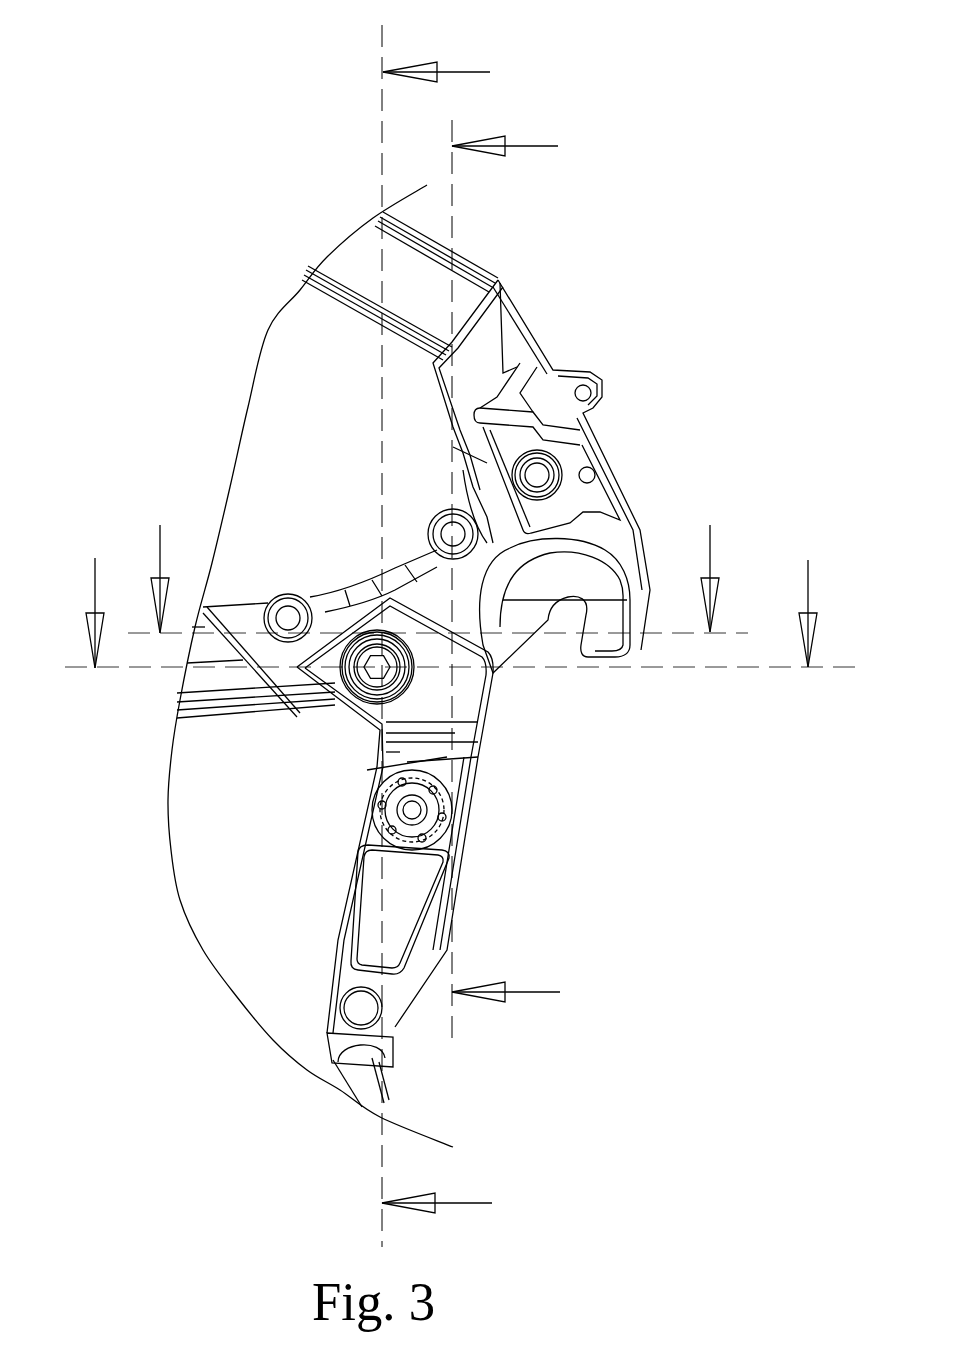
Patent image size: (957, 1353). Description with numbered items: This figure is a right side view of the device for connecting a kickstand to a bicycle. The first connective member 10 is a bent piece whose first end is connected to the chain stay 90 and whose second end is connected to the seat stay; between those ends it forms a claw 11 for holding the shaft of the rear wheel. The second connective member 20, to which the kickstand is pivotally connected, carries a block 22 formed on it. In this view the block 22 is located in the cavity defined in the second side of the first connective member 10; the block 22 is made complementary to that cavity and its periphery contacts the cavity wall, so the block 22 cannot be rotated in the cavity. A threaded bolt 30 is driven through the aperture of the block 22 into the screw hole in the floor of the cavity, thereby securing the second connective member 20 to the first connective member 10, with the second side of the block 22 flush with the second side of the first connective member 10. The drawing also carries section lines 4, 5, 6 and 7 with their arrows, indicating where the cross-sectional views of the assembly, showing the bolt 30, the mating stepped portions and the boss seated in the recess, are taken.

The first connective member 10 is at (530, 332).
The claw 11 is at (600, 643).
The second connective member 20 is at (480, 753).
The block 22 is at (392, 617).
The threaded bolt 30 is at (352, 706).
The chain stay 90 is at (350, 253).
The section line 4- 4 is at (470, 1260).
The section line 5- 5 is at (52, 647).
The section line 6- 6 is at (118, 522).
The section line 7- 7 is at (522, 1073).